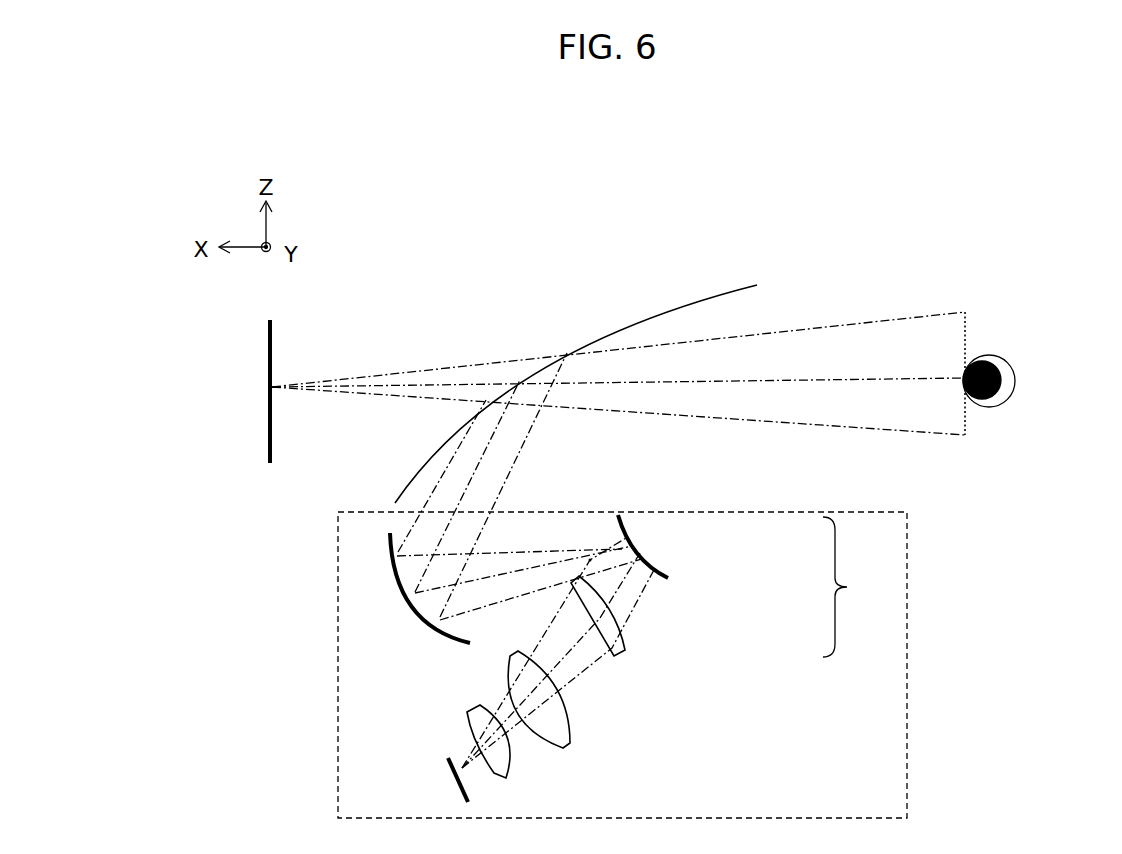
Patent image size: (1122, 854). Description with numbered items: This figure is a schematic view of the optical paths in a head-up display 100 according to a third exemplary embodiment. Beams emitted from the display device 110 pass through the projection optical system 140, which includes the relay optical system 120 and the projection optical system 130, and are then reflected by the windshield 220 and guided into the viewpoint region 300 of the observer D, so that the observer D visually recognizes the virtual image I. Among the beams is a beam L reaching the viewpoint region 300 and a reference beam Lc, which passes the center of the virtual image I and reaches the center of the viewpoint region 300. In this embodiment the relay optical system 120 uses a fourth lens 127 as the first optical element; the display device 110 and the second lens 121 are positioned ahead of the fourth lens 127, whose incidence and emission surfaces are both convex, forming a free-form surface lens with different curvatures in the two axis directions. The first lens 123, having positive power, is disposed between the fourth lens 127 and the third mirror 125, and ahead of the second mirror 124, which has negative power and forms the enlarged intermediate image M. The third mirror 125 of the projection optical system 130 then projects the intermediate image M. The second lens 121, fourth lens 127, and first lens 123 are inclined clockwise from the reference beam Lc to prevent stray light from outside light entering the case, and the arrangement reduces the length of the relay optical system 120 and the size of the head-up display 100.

The head-up display 100 is at (908, 548).
The display device 110 is at (452, 773).
The relay optical system 120 is at (750, 658).
The second lens 121 is at (512, 772).
The first lens 123 is at (622, 643).
The second mirror 124 is at (628, 528).
The third mirror 125 is at (440, 631).
The fourth lens 127 is at (573, 737).
The projection optical system 130 is at (727, 554).
The projection optical system 140 is at (858, 587).
The windshield 220 is at (655, 322).
The viewpoint region 300 is at (965, 320).
The observer D is at (1014, 380).
The virtual image I is at (272, 343).
The beam L is at (805, 327).
The reference beam Lc is at (407, 383).
The intermediate image M is at (588, 558).